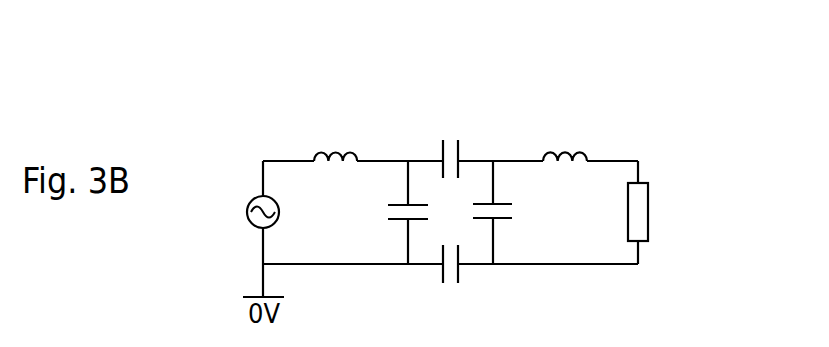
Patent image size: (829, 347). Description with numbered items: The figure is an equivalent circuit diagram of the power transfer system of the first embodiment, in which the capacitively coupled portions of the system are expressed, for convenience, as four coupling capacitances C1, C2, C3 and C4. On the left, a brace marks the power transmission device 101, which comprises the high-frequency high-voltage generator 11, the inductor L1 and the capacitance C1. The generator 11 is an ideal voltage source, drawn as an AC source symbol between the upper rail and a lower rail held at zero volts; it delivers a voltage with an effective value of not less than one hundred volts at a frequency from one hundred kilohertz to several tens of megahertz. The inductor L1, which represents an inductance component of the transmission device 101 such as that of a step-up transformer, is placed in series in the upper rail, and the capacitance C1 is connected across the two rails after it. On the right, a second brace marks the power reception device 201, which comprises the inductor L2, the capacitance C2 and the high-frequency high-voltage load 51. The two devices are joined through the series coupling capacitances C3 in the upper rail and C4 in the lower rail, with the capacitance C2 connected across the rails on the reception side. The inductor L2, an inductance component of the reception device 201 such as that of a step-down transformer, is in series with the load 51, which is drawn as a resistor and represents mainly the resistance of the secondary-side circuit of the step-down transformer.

The high-frequency high-voltage generator 11 is at (246, 212).
The high-frequency high-voltage load 51 is at (649, 208).
The power transmission device 101 is at (443, 95).
The power reception device 201 is at (457, 95).
The inductor L1 is at (335, 138).
The inductor L2 is at (565, 138).
The coupling capacitance C1 is at (387, 212).
The coupling capacitance C2 is at (514, 212).
The coupling capacitance C3 is at (450, 141).
The coupling capacitance C4 is at (450, 281).